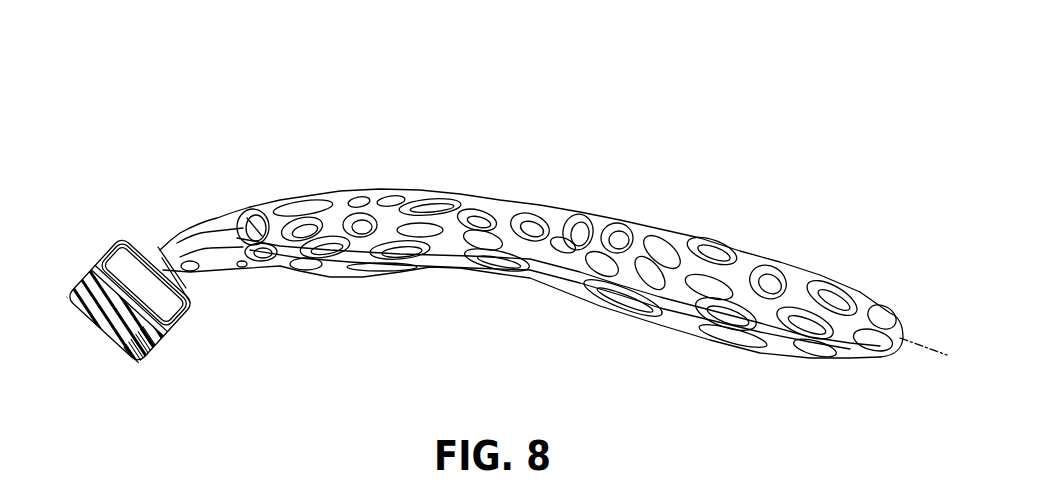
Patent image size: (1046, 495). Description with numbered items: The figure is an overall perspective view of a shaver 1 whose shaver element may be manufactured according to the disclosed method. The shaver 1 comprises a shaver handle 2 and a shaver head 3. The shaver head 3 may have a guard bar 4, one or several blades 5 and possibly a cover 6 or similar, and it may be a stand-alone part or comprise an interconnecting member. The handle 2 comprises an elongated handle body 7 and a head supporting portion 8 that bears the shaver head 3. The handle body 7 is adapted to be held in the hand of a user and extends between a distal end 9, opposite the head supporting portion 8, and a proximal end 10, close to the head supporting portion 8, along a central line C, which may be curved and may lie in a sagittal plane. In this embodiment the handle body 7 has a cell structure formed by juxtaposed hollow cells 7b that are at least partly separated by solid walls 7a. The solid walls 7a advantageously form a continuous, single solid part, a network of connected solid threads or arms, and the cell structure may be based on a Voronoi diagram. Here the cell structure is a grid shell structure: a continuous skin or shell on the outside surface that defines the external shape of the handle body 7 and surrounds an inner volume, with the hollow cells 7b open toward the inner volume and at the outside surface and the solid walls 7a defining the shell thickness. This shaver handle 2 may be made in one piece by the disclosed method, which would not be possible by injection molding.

The shaver 1 is at (473, 261).
The shaver handle 2 is at (678, 186).
The shaver head 3 is at (90, 225).
The guard bar 4 is at (150, 363).
The blades 5 is at (126, 318).
The cover 6 is at (85, 313).
The handle body 7 is at (564, 190).
The solid walls 7a is at (745, 270).
The hollow cells 7b is at (733, 310).
The head supporting portion 8 is at (170, 222).
The distal end 9 is at (897, 328).
The proximal end 10 is at (246, 209).
The central line c is at (915, 345).